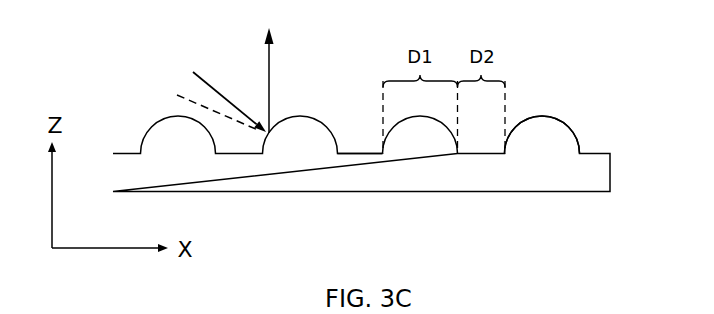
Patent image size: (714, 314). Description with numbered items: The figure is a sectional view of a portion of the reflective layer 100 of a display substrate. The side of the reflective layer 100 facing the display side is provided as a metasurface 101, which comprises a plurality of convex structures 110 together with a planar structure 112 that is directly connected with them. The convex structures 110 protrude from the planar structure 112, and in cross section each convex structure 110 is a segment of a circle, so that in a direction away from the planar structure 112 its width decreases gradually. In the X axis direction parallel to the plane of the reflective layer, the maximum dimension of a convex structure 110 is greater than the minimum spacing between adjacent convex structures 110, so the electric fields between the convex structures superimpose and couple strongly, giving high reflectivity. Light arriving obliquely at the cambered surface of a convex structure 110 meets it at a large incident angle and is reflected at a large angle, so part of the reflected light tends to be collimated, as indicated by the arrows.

The reflective layer 100 is at (358, 254).
The metasurface 101 is at (596, 125).
The convex structure 110 is at (420, 135).
The planar structure 112 is at (358, 154).